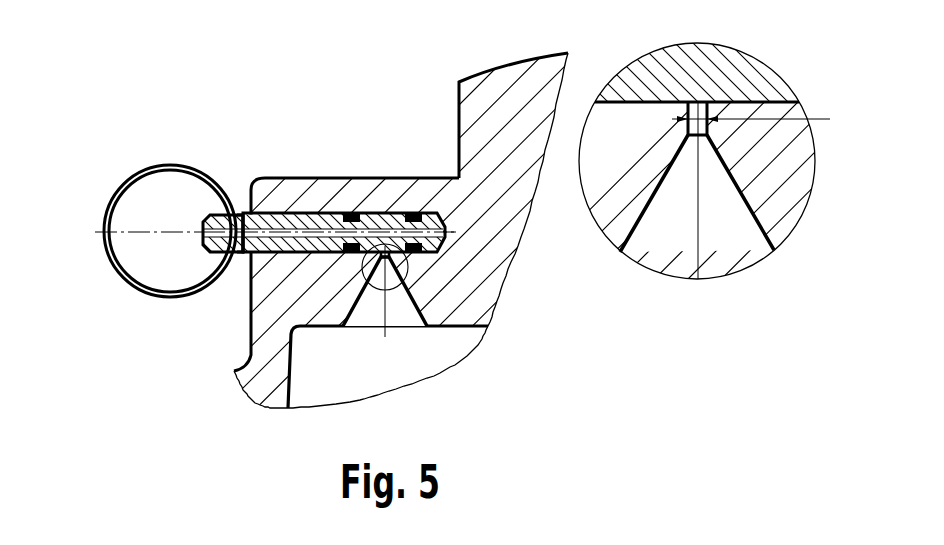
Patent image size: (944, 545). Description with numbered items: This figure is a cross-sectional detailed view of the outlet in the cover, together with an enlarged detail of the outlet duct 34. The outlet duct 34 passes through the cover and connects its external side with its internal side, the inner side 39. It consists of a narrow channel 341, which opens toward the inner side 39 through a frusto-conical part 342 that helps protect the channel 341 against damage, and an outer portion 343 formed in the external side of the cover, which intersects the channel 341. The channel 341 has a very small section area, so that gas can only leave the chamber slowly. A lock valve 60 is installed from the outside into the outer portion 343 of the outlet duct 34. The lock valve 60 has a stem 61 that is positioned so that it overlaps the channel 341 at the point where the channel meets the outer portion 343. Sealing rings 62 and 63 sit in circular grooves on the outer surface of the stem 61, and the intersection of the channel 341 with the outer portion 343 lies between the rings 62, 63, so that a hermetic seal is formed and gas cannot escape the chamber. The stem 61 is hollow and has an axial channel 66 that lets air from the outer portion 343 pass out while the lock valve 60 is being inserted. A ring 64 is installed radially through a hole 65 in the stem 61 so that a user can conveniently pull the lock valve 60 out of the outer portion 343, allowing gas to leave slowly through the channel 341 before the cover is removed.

The outlet duct 34 is at (412, 337).
The inner side of cover 39 is at (275, 392).
The lock valve 60 is at (236, 292).
The stem 61 is at (251, 315).
The sealing ring 62 is at (352, 215).
The sealing ring 63 is at (413, 215).
The ring 64 is at (112, 267).
The hole 65 is at (238, 215).
The axial channel 66 is at (205, 225).
The channel 341 is at (398, 263).
The frusto-conical part 342 is at (393, 302).
The outer portion 343 is at (300, 212).